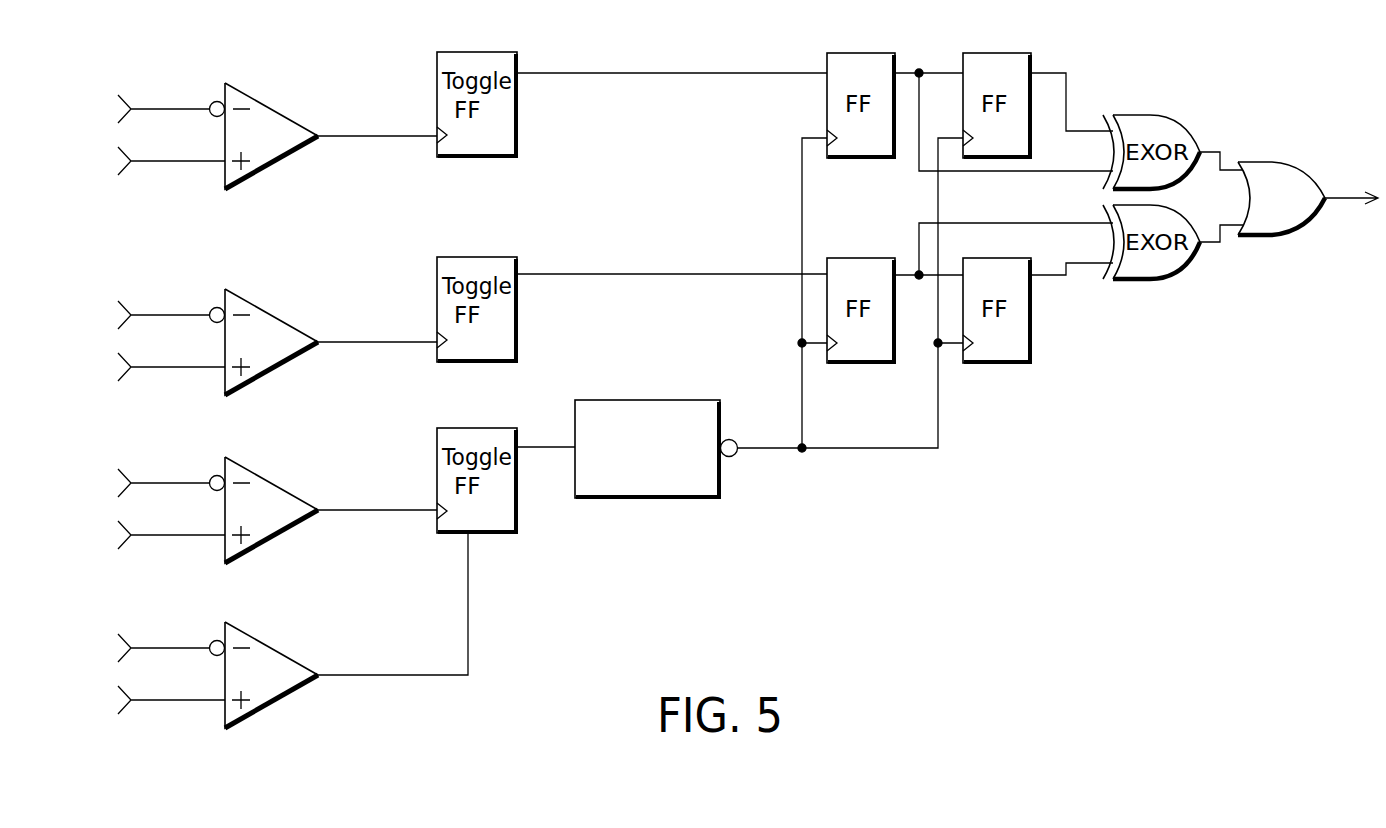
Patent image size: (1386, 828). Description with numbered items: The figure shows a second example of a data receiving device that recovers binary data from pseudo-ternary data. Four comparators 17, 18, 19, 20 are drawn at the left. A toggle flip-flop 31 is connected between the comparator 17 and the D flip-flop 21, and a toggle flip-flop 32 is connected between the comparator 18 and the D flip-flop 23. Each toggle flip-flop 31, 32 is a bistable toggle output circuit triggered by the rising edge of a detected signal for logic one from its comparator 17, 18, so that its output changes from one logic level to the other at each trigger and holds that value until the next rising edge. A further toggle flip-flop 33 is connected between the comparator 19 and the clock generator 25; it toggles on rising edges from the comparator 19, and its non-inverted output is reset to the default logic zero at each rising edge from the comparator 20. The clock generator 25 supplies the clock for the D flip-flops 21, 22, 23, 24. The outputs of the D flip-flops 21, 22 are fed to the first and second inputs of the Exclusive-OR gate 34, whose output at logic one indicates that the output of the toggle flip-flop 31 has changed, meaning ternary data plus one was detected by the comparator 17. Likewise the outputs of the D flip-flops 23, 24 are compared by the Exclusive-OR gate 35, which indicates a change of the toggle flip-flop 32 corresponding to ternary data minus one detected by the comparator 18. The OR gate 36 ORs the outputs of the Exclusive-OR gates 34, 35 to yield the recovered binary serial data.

The comparator 17 is at (262, 100).
The comparator 18 is at (262, 305).
The comparator 19 is at (262, 473).
The comparator 20 is at (262, 638).
The D flip-flop 21 is at (868, 53).
The D flip-flop 22 is at (1003, 53).
The D flip-flop 23 is at (860, 364).
The D flip-flop 24 is at (992, 364).
The clock generator 25 is at (670, 400).
The toggle flip-flop 31 is at (519, 127).
The toggle flip-flop 32 is at (519, 332).
The toggle flip-flop 33 is at (517, 518).
The Exclusive-OR gate 34 is at (1190, 124).
The Exclusive-OR gate 35 is at (1190, 270).
The OR gate 36 is at (1266, 162).